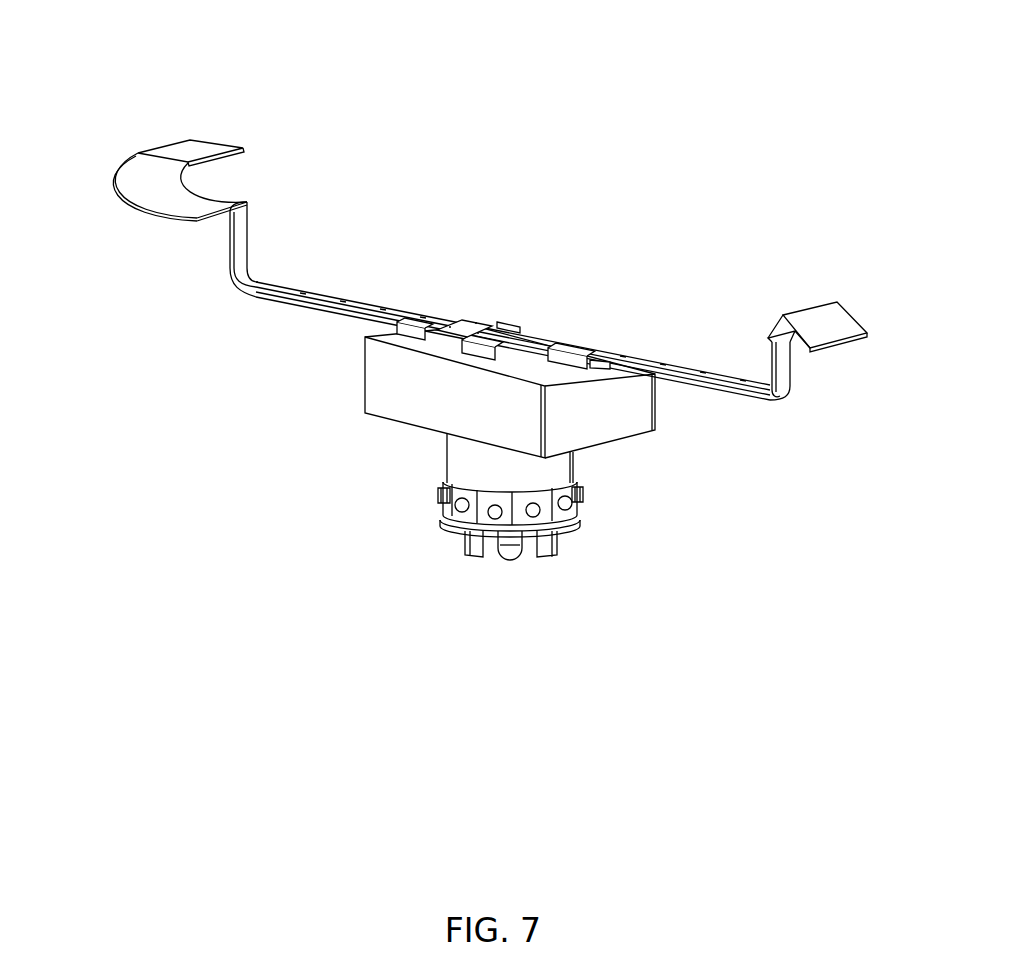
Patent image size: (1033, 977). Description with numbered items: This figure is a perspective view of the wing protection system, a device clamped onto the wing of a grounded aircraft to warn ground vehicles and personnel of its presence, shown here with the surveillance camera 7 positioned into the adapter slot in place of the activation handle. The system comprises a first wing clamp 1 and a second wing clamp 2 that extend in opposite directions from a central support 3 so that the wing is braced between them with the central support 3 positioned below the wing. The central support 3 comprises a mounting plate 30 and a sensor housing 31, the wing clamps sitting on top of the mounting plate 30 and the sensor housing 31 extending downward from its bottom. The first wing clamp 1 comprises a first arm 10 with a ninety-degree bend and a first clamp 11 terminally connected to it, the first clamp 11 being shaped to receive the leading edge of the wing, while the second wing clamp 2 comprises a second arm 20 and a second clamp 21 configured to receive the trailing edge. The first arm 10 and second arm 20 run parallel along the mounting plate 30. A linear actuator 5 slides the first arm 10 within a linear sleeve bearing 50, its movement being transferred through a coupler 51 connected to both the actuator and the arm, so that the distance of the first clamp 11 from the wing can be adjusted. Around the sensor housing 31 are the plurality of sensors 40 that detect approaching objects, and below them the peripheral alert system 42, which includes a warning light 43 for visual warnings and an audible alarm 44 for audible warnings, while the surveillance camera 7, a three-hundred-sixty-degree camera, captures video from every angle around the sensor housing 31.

The first wing clamp 1 is at (451, 70).
The second wing clamp 2 is at (758, 219).
The central support 3 is at (511, 682).
The linear actuator 5 is at (577, 363).
The surveillance camera 7 is at (505, 558).
The first arm 10 is at (310, 305).
The first clamp 11 is at (215, 143).
The second arm 20 is at (832, 310).
The second clamp 21 is at (743, 393).
The mounting plate 30 is at (375, 366).
The sensor housing 31 is at (452, 457).
The plurality of sensors 40 is at (458, 508).
The peripheral alert system 42 is at (320, 540).
The warning light 43 is at (533, 530).
The audible alarm 44 is at (470, 543).
The linear sleeve bearing 50 is at (475, 352).
The coupler 51 is at (463, 327).